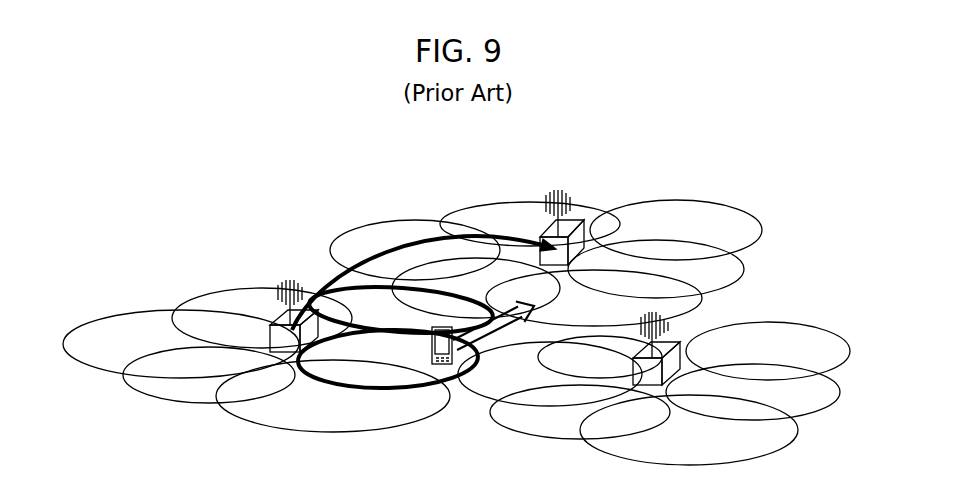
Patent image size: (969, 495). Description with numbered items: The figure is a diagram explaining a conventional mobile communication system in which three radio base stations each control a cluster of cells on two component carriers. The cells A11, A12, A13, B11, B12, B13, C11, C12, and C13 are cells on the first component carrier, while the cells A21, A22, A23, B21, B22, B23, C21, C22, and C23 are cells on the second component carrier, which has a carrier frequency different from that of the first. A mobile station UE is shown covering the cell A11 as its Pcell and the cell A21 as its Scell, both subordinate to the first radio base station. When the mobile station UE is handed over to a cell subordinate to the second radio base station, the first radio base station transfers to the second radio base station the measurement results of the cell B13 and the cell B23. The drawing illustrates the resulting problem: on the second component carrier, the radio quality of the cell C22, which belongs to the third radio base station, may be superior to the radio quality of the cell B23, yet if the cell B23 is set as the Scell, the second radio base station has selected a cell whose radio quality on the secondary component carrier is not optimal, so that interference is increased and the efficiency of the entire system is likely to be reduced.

The cell A11 is at (401, 310).
The cell A12 is at (181, 344).
The cell A13 is at (333, 396).
The cell A21 is at (387, 359).
The cell A22 is at (262, 318).
The cell A23 is at (209, 375).
The cell B11 is at (676, 230).
The cell B12 is at (415, 250).
The cell B13 is at (594, 298).
The cell B21 is at (656, 269).
The cell B22 is at (530, 224).
The cell B23 is at (476, 288).
The cell C11 is at (768, 351).
The cell C12 is at (550, 374).
The cell C13 is at (689, 430).
The cell C21 is at (753, 392).
The cell C22 is at (600, 357).
The cell C23 is at (580, 412).
The mobile station UE is at (438, 363).